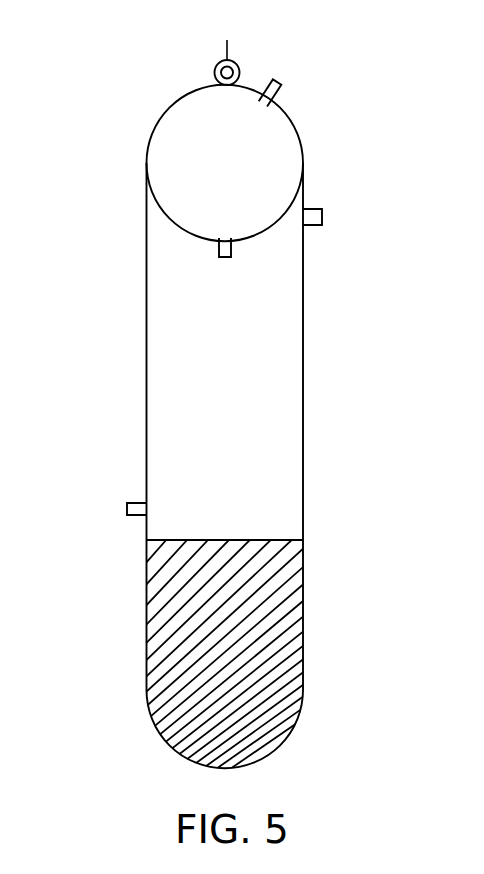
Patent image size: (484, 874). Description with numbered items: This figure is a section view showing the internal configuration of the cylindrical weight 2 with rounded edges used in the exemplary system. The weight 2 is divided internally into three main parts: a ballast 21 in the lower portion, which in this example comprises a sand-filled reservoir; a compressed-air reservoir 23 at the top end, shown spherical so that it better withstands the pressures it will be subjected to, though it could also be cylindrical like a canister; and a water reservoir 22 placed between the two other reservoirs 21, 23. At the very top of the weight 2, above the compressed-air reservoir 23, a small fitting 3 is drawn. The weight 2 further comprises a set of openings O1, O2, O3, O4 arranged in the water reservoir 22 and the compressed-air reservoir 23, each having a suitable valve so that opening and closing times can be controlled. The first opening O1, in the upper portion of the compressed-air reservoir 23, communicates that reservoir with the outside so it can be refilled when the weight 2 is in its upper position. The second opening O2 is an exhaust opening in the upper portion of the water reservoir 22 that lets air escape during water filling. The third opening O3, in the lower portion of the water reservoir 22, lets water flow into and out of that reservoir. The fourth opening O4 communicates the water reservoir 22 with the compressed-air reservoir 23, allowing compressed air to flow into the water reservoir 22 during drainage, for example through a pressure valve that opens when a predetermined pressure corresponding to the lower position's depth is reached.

The cylindrical weight 2 is at (70, 225).
The valve fitting 3 is at (227, 50).
The ballast 21 is at (263, 632).
The water reservoir 22 is at (267, 389).
The compressed-air reservoir 23 is at (282, 146).
The first opening O1 is at (281, 85).
The second opening O2 is at (327, 219).
The third opening O3 is at (121, 511).
The fourth opening O4 is at (229, 261).